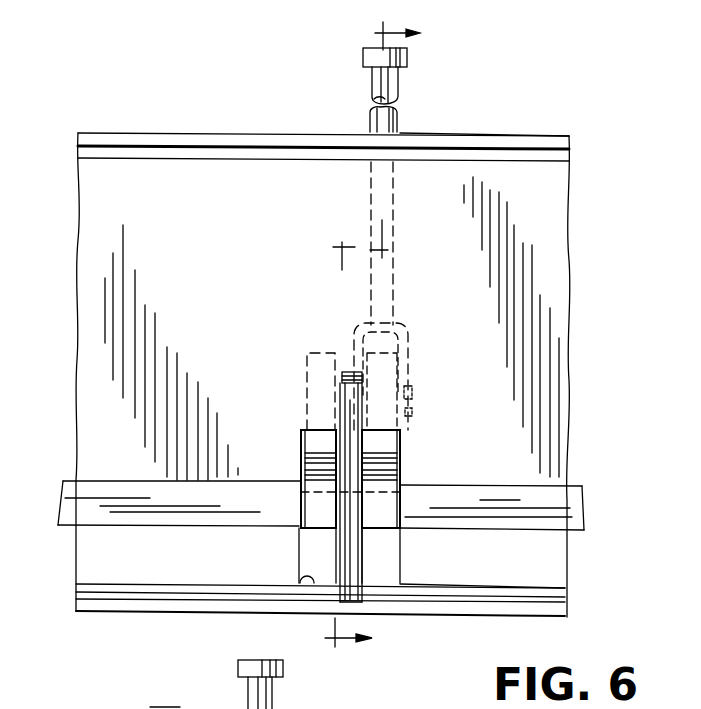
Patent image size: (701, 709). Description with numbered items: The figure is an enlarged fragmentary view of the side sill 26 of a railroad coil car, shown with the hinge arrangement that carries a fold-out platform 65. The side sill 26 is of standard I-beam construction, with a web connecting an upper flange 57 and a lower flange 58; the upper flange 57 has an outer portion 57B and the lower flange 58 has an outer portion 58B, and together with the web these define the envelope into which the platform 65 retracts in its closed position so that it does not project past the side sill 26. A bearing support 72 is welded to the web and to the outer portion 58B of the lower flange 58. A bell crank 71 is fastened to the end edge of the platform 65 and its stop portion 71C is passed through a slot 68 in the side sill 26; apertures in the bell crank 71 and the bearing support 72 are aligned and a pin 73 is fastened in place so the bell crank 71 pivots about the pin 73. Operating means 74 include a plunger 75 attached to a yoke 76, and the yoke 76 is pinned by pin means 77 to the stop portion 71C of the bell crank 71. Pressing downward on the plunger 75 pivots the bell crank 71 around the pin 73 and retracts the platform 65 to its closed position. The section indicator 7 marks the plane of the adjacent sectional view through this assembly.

The side sill 26 is at (182, 281).
The upper flange 57 is at (163, 134).
The outer portion of upper flange 57B is at (520, 135).
The plunger 75 is at (372, 113).
The section line 7- 7 is at (366, 335).
The yoke 76 is at (403, 328).
The pin means 77 is at (408, 397).
The stop portion 71C is at (307, 375).
The bearing support 72 is at (350, 372).
The bell crank 71 is at (310, 528).
The pin 73 is at (400, 470).
The platform 65 is at (80, 497).
The lower flange 58 is at (98, 605).
The outer portion of lower flange 58B is at (535, 607).
The slot 68 is at (300, 578).
The operating means 74 is at (333, 700).